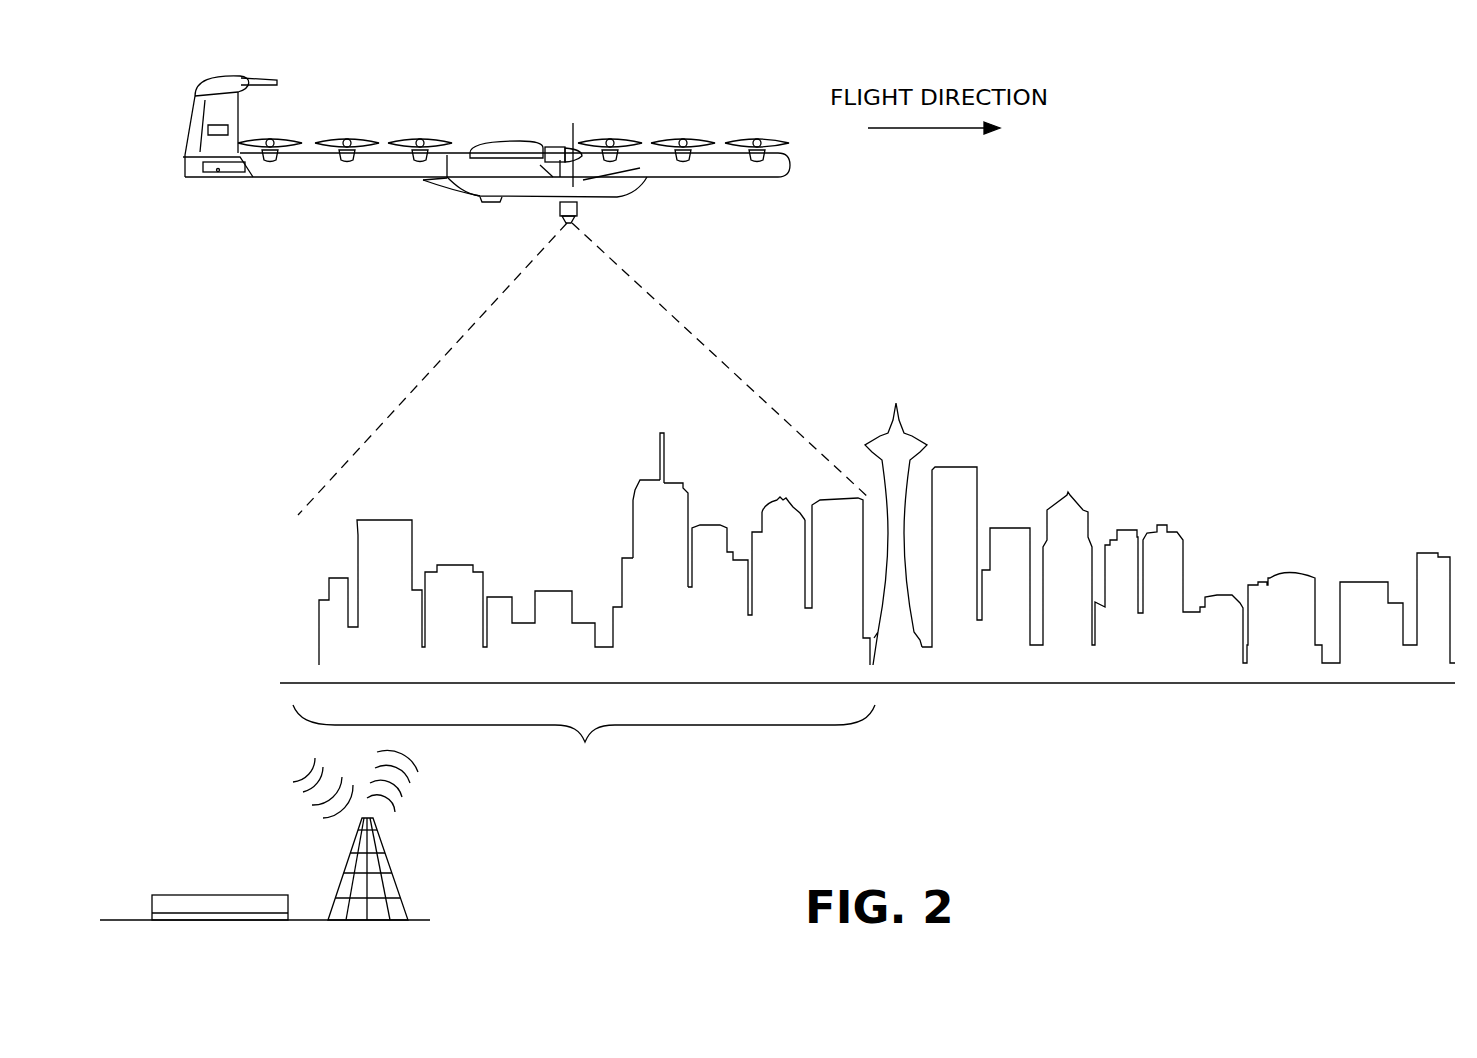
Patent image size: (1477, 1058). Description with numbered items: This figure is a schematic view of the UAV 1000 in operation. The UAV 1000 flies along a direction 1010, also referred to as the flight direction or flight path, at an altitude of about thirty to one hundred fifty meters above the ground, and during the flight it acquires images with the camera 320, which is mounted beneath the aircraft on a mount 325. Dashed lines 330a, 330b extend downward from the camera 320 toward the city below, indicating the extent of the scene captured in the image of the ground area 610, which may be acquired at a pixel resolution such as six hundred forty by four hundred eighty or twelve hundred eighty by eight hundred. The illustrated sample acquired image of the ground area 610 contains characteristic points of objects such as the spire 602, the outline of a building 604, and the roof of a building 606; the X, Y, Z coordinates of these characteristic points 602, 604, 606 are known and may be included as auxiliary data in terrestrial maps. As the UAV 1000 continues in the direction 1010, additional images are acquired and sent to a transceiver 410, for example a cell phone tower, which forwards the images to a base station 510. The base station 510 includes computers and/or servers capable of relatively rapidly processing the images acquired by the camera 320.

The UAV 1000 is at (275, 188).
The flight direction 1010 is at (918, 130).
The camera 320 is at (562, 220).
The sensor mount 325 is at (578, 207).
The field of view boundary 330a is at (489, 312).
The field of view boundary 330b is at (667, 311).
The spire 602 is at (660, 435).
The outline of a building 604 is at (635, 500).
The roof of a building 606 is at (772, 512).
The ground area 610 is at (867, 589).
The base station 510 is at (202, 895).
The transceiver 410 is at (383, 853).